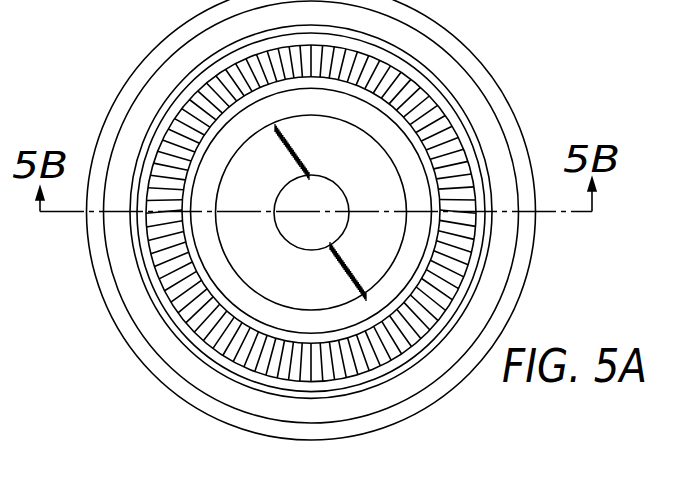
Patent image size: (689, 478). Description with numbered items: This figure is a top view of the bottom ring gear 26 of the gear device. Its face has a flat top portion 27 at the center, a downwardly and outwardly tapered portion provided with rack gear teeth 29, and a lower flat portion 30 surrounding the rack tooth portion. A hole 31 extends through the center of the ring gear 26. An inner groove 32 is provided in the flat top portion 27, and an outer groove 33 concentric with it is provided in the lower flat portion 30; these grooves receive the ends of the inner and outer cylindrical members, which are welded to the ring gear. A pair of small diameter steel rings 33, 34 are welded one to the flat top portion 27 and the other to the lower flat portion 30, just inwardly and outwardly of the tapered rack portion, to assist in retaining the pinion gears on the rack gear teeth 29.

The ring gear 26 is at (512, 103).
The lower flat portion 30 is at (126, 99).
The small diameter steel ring 34 is at (124, 243).
The outer groove / small diameter steel ring 33 is at (433, 174).
The rack gear teeth 29 is at (192, 311).
The inner groove 32 is at (221, 181).
The flat top portion 27 is at (322, 283).
The hole 31 is at (287, 179).